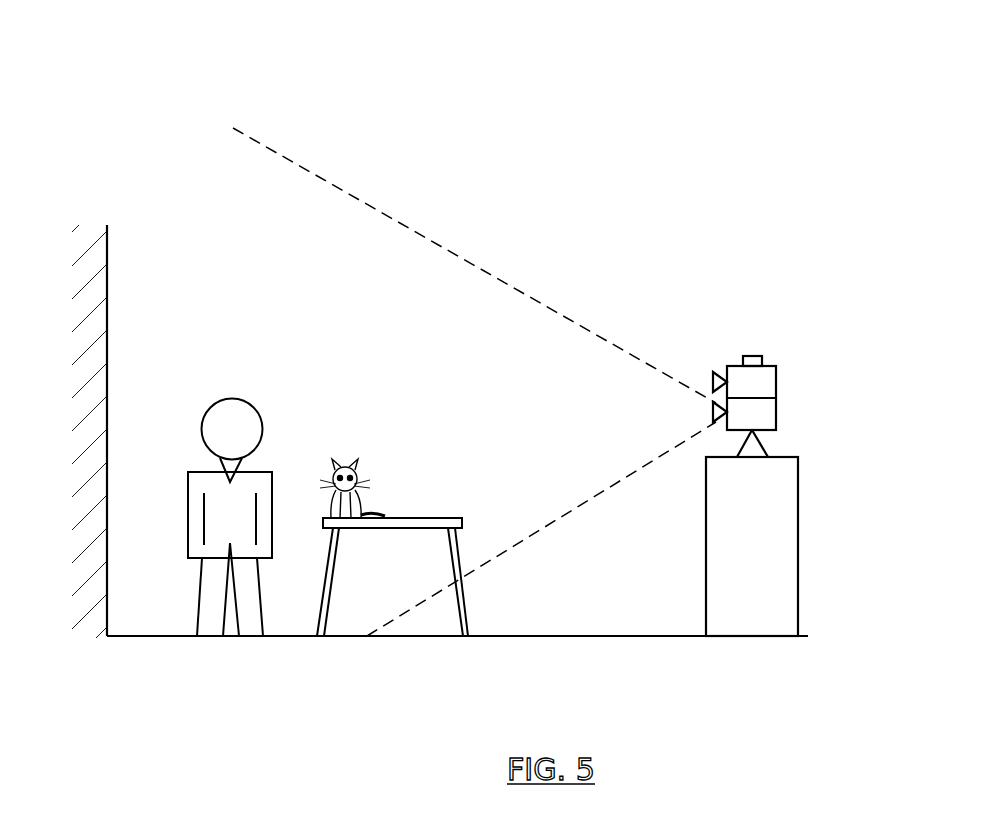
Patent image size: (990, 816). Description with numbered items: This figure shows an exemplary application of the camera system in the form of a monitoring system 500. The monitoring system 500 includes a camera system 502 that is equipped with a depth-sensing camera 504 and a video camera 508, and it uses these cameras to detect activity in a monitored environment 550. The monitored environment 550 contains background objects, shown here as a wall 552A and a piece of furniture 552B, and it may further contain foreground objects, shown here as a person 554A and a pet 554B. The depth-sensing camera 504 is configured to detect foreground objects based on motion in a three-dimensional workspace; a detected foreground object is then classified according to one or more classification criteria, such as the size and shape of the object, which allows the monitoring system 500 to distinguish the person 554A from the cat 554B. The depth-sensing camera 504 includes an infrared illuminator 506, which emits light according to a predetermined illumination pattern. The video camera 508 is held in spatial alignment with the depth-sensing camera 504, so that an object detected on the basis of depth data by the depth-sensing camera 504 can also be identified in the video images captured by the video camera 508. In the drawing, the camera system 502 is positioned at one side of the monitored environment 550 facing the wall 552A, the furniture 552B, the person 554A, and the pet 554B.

The monitoring system 500 is at (756, 162).
The camera system 502 is at (745, 355).
The depth-sensing camera 504 is at (742, 380).
The infrared illuminator 506 is at (763, 356).
The video camera 508 is at (776, 432).
The monitored environment 550 is at (165, 214).
The walls 552A is at (108, 355).
The furniture 552B is at (466, 615).
The person 554A is at (255, 407).
The pet 554B is at (365, 475).